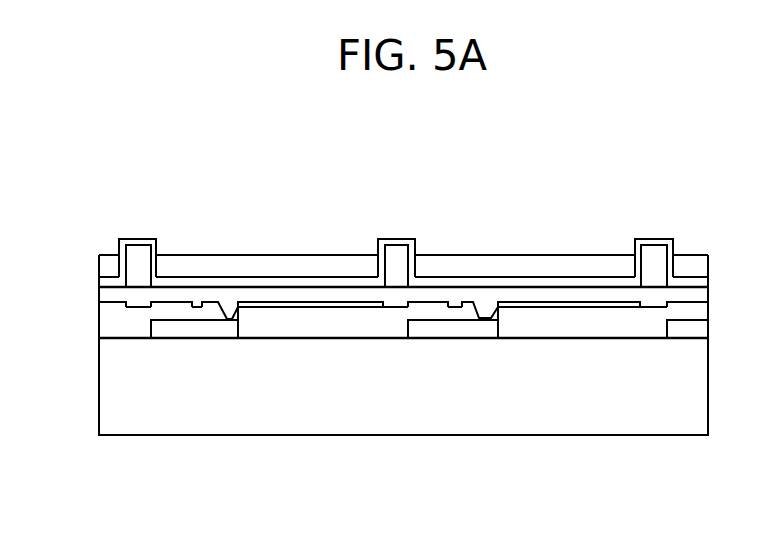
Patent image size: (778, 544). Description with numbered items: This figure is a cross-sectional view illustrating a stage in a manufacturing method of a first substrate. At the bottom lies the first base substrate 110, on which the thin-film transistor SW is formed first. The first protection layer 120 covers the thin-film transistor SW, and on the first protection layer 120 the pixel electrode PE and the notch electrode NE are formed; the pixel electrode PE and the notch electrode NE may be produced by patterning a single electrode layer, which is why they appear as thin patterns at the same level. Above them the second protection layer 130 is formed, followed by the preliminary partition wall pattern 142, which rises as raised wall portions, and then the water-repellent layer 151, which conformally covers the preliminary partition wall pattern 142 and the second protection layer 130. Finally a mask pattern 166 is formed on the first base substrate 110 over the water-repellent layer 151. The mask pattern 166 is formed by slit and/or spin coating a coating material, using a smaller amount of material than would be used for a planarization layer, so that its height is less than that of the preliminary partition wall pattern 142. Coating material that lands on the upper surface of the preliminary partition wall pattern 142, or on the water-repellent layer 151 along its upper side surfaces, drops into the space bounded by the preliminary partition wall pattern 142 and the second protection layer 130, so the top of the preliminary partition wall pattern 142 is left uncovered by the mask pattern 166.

The first base substrate 110 is at (102, 382).
The first protection layer 120 is at (102, 325).
The second protection layer 130 is at (98, 293).
The preliminary partition wall pattern 142 is at (127, 266).
The water-repellent layer 151 is at (337, 280).
The mask pattern 166 is at (553, 272).
The notch electrode NE is at (165, 303).
The thin-film transistor SW is at (203, 330).
The pixel electrode PE is at (263, 305).